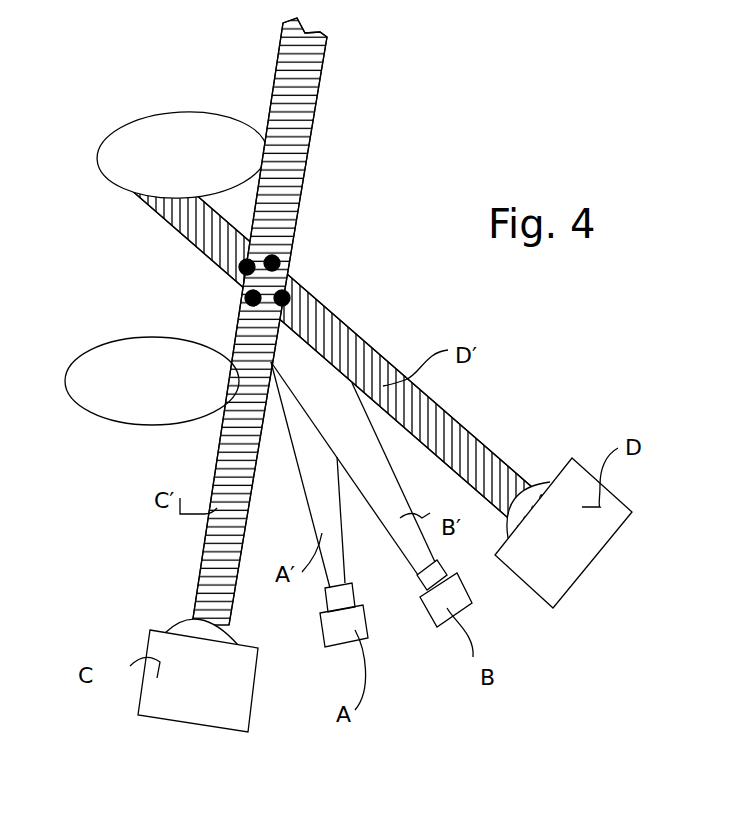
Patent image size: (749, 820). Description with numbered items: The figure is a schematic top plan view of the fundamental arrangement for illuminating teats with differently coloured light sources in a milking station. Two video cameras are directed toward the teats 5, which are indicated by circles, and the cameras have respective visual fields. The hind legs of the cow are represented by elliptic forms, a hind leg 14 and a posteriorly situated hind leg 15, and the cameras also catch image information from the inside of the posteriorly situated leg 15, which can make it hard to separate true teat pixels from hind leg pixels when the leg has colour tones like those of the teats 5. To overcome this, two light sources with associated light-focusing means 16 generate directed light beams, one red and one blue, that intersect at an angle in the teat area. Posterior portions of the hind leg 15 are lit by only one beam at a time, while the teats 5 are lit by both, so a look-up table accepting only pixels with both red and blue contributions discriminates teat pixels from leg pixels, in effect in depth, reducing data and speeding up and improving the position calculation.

The teats 5 is at (283, 264).
The hind leg 14 is at (102, 373).
The posteriorly situated hind leg 15 is at (118, 153).
The light-focusing means 16 is at (533, 497).